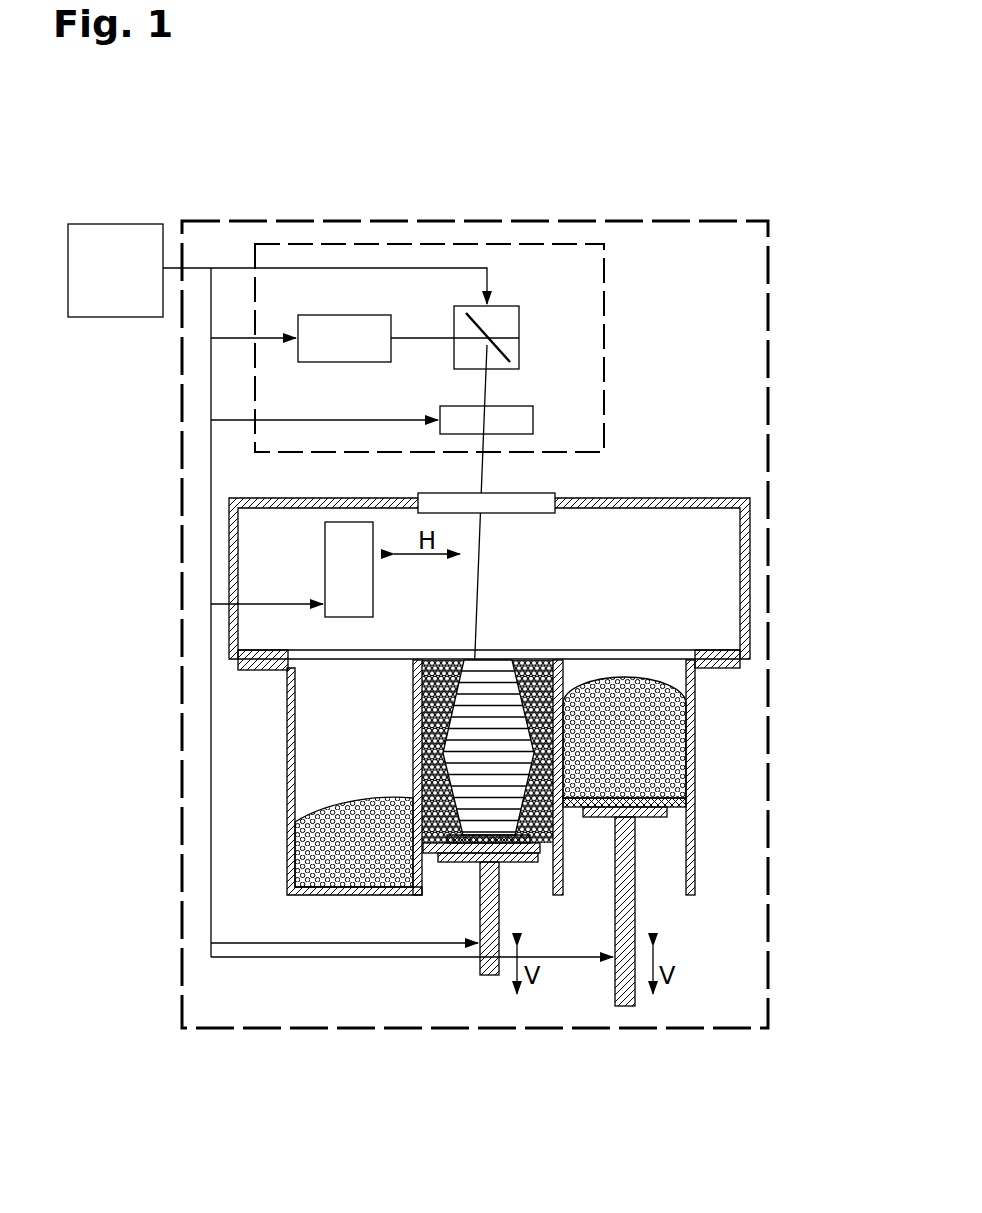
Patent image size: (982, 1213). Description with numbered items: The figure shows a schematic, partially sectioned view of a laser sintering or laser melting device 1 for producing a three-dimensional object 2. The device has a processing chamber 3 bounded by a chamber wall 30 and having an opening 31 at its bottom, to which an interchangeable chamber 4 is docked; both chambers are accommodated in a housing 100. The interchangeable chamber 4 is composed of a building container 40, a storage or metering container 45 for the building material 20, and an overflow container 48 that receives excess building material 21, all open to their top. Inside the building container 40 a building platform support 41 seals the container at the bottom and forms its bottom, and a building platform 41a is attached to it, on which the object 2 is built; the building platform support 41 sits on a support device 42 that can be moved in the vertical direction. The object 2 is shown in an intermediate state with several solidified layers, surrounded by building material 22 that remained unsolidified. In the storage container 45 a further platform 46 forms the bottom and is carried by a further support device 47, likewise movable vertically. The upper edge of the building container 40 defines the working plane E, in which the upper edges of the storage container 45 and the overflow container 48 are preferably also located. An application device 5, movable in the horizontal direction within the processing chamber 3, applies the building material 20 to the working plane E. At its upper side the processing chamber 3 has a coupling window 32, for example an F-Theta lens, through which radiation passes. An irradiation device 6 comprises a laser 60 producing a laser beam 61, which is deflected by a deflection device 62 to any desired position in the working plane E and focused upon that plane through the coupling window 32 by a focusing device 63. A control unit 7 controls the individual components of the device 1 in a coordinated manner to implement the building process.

The laser sintering or laser melting device 1 is at (681, 218).
The three-dimensional object 2 is at (488, 677).
The processing chamber 3 is at (752, 569).
The interchangeable chamber 4 is at (699, 705).
The application device 5 is at (323, 573).
The irradiation device 6 is at (608, 283).
The control unit 7 is at (106, 221).
The building material 20 is at (605, 680).
The excess building material 21 is at (323, 828).
The unsolidified building material 22 is at (443, 660).
The chamber wall 30 is at (229, 553).
The opening 31 is at (677, 655).
The coupling window 32 is at (528, 494).
The building container 40 is at (422, 715).
The building platform support 41 is at (437, 853).
The building platform 41a is at (520, 862).
The support device 42 is at (488, 975).
The storage container 45 is at (686, 762).
The platform 46 is at (572, 808).
The further support device 47 is at (627, 1006).
The overflow container 48 is at (296, 760).
The laser 60 is at (360, 315).
The laser beam 61 is at (425, 338).
The deflection device 62 is at (519, 355).
The focusing device 63 is at (533, 420).
The housing 100 is at (770, 330).
The working plane E is at (540, 660).